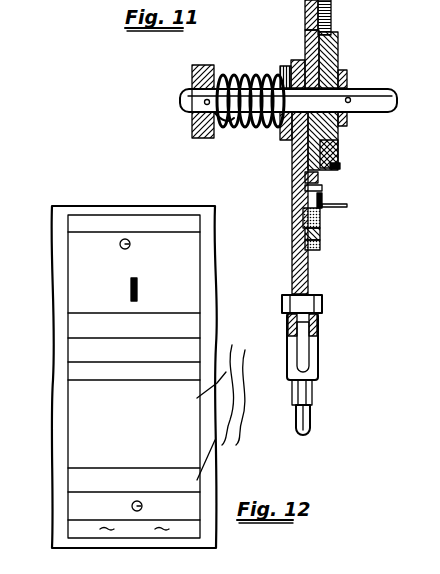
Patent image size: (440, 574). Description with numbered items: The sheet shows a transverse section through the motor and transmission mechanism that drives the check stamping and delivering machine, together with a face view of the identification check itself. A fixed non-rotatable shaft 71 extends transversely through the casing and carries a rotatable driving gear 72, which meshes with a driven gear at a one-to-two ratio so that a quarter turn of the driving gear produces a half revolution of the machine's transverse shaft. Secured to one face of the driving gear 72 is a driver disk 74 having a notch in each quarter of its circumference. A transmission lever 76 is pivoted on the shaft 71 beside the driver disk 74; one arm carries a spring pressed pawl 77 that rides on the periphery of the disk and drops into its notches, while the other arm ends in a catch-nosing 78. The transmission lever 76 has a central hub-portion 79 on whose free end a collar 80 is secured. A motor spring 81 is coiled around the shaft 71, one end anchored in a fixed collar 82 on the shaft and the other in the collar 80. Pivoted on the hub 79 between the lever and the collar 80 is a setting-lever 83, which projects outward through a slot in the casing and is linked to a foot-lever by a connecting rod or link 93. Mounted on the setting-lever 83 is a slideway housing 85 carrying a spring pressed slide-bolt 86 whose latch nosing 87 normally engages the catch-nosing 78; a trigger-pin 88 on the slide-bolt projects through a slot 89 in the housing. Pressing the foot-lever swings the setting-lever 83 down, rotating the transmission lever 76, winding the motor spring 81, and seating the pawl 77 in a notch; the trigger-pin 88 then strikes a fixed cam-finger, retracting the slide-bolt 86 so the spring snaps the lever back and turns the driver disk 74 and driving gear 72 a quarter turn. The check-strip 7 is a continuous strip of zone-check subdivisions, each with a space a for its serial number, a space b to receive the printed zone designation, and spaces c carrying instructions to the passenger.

In FIG. 11, the fixed non-rotatable shaft 71 is at (181, 100).
In FIG. 11, the rotatable driving gear 72 is at (339, 50).
In FIG. 11, the driver disk 74 is at (348, 68).
In FIG. 11, the transmission lever 76 is at (305, 23).
In FIG. 11, the spring pressed pawl 77 is at (331, 26).
In FIG. 11, the catch-nosing 78 is at (320, 180).
In FIG. 11, the hub-portion 79 is at (292, 146).
In FIG. 11, the collar 80 is at (283, 70).
In FIG. 11, the motor spring 81 is at (245, 76).
In FIG. 11, the fixed collar 82 is at (206, 66).
In FIG. 11, the setting-lever 83 is at (296, 68).
In FIG. 11, the slideway housing 85 is at (322, 229).
In FIG. 11, the slide-bolt 86 is at (322, 238).
In FIG. 11, the latch nosing 87 is at (323, 188).
In FIG. 11, the trigger-pin 88 is at (325, 213).
In FIG. 11, the slot 89 is at (323, 200).
In FIG. 11, the connecting rod or link 93 is at (313, 413).
In FIG. 12, the check-strip 7 is at (94, 207).
In FIG. 12, the serial number space a is at (170, 222).
In FIG. 12, the zone designation space b is at (178, 289).
In FIG. 12, the instruction spaces c is at (183, 357).